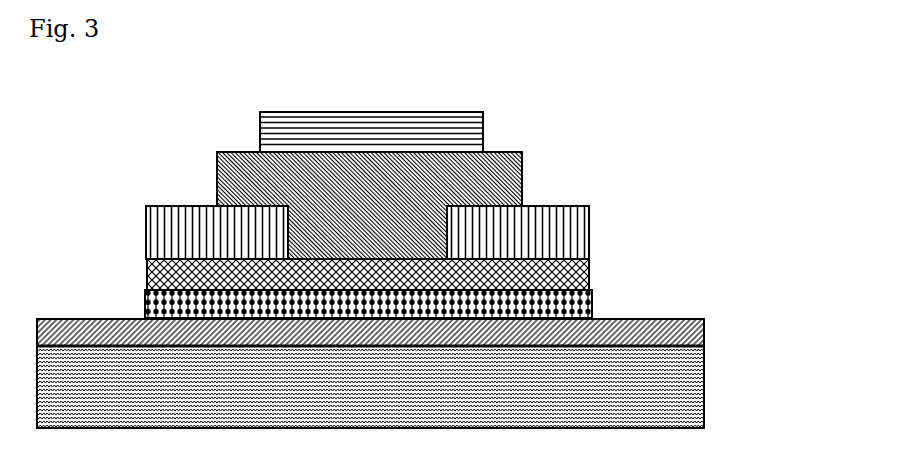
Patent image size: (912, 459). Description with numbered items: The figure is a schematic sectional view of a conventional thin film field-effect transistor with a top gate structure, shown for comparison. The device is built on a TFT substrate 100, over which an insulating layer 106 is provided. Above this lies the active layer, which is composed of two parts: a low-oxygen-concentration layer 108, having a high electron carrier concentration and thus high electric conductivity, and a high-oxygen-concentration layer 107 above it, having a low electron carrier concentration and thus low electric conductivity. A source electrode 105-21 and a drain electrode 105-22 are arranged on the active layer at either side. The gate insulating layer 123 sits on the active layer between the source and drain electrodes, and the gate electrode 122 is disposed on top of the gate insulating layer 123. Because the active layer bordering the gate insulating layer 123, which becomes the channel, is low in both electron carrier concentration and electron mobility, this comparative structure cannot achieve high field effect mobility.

The TFT substrate 100 is at (694, 388).
The insulating layer 106 is at (685, 333).
The low-oxygen-concentration layer 108 is at (592, 305).
The high-oxygen-concentration layer 107 is at (590, 278).
The source electrode 105-21 is at (182, 206).
The drain electrode 105-22 is at (578, 228).
The gate insulating layer 123 is at (510, 181).
The gate electrode 122 is at (483, 130).